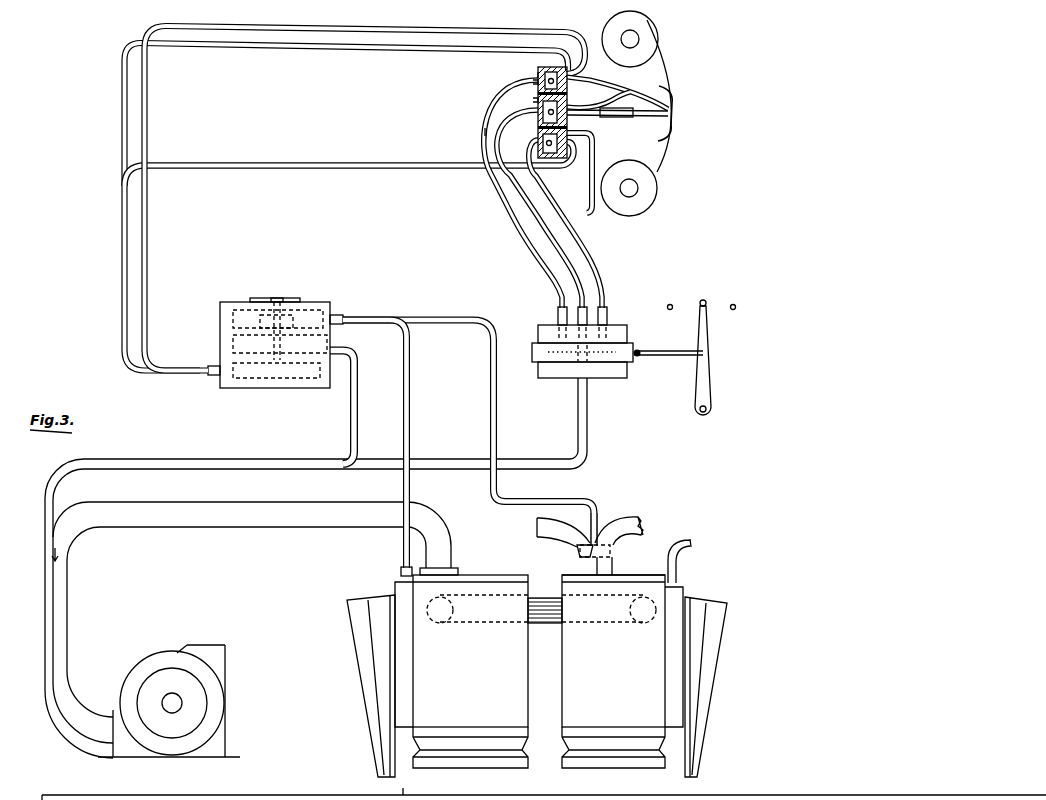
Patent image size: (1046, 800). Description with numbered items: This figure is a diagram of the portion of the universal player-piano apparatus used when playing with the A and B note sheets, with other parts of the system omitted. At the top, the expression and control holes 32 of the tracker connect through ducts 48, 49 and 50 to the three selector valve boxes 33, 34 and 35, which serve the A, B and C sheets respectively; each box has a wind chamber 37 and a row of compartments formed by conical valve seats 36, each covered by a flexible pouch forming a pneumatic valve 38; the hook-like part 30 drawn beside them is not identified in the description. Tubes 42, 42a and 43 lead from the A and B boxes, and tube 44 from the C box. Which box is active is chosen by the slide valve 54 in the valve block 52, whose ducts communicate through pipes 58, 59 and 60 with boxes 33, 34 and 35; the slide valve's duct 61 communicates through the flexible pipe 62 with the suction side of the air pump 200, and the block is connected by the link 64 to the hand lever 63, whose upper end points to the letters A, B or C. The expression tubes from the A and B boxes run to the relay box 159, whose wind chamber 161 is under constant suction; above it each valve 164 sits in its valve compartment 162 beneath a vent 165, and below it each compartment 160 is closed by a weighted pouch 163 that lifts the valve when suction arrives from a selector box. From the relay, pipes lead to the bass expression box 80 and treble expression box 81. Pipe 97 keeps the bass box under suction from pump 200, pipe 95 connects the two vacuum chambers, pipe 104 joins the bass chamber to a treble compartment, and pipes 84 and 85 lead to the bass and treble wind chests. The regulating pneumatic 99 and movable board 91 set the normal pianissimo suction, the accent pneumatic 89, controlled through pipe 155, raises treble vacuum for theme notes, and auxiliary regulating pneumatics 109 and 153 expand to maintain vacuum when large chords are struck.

The guide hook 30 is at (673, 99).
The expression and control holes 32 is at (673, 114).
The selector valve box 33 is at (537, 69).
The selector valve box 34 is at (487, 132).
The selector valve box 35 is at (533, 100).
The conical valve seat 36 is at (538, 75).
The wind chamber 37 is at (553, 68).
The pneumatic valve 38 is at (535, 83).
The tube or duct 42 is at (383, 48).
The tube or duct 42a is at (463, 28).
The tube or duct 43 is at (423, 170).
The duct or tube 44 is at (597, 136).
The duct 48 is at (617, 86).
The duct 49 is at (617, 120).
The duct 50 is at (606, 103).
The valve block 52 is at (542, 331).
The slide valve 54 is at (623, 347).
The pipe 58 is at (546, 283).
The pipe 59 is at (600, 279).
The pipe 60 is at (565, 263).
The duct 61 is at (578, 352).
The flexible pipe 62 is at (588, 417).
The hand lever 63 is at (707, 377).
The link 64 is at (665, 350).
The bass expression box 80 is at (475, 585).
The treble expression box 81 is at (570, 588).
The pipe 84 is at (534, 527).
The pipe 85 is at (631, 518).
The accent or theme pneumatic 89 is at (614, 558).
The movable board of regulating pneumatic 91 is at (607, 768).
The connecting pipe 95 is at (602, 623).
The pipe 97 is at (364, 511).
The regulating pneumatic 99 is at (480, 765).
The pipe 104 is at (543, 615).
The regulating pneumatic 109 is at (358, 654).
The regulating pneumatic 153 is at (712, 651).
The pipe 155 is at (597, 513).
The relay box 159 is at (273, 385).
The compartment 160 is at (237, 380).
The wind chamber 161 is at (330, 341).
The valve compartment 162 is at (320, 311).
The weighted flexible diaphragm or pouch 163 is at (287, 360).
The valve 164 is at (293, 318).
The vent 165 is at (282, 300).
The air pump 200 is at (165, 660).